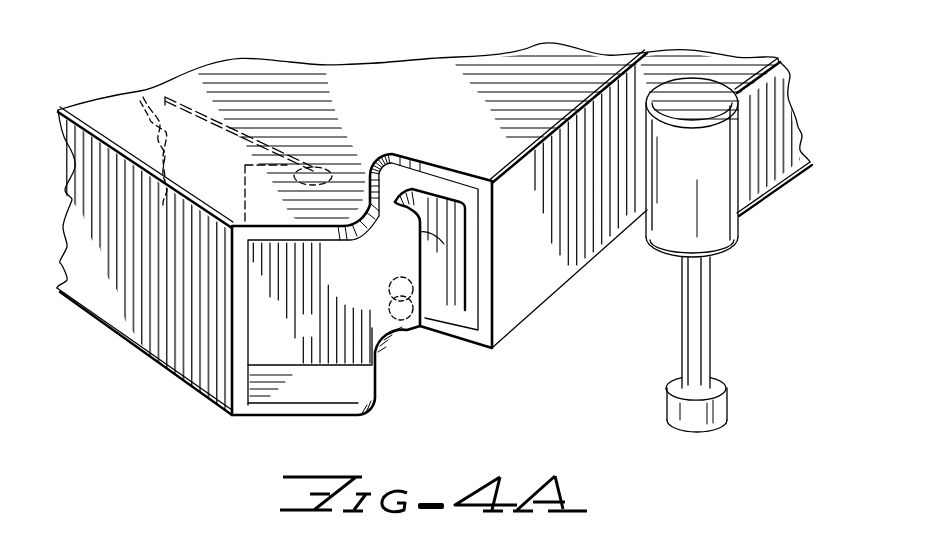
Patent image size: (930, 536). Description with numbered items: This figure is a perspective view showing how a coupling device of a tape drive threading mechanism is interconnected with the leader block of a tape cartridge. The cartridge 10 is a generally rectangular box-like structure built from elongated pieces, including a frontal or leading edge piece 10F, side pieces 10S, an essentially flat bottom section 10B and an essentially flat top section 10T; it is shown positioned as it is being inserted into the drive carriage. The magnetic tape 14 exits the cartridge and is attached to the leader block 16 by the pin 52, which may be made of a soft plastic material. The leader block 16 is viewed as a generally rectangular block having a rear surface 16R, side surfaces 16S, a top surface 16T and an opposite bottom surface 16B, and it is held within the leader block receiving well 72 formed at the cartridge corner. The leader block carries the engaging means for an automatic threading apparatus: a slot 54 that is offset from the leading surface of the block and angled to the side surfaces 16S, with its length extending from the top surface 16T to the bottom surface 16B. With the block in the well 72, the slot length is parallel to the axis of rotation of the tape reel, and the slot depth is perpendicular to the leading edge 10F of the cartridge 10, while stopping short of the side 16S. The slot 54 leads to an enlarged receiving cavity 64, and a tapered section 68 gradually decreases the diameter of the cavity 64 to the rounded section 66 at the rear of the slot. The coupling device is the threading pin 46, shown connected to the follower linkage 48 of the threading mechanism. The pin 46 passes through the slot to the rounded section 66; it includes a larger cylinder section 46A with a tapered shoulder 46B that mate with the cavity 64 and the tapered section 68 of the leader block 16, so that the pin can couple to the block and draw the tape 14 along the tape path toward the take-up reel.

The cartridge 10 is at (434, 219).
The top section 10T is at (563, 63).
The side piece 10S is at (200, 380).
The frontal or leading edge piece 10F is at (555, 282).
The bottom section 10B is at (508, 338).
The magnetic tape 14 is at (143, 97).
The leader block 16 is at (337, 261).
The side surface 16S is at (346, 168).
The top surface 16T is at (402, 170).
The rear surface 16R is at (243, 182).
The bottom surface 16B is at (343, 372).
The follower linkage 48 is at (652, 82).
The pin 52 is at (317, 170).
The slot 54 is at (442, 197).
The enlarged receiving cavity 64 is at (412, 330).
The rounded section 66 is at (417, 207).
The tapered section 68 is at (390, 296).
The leader block receiving well 72 is at (434, 325).
The threading pin 46 is at (694, 255).
The larger cylinder section 46A is at (667, 396).
The tapered shoulder 46B is at (720, 383).